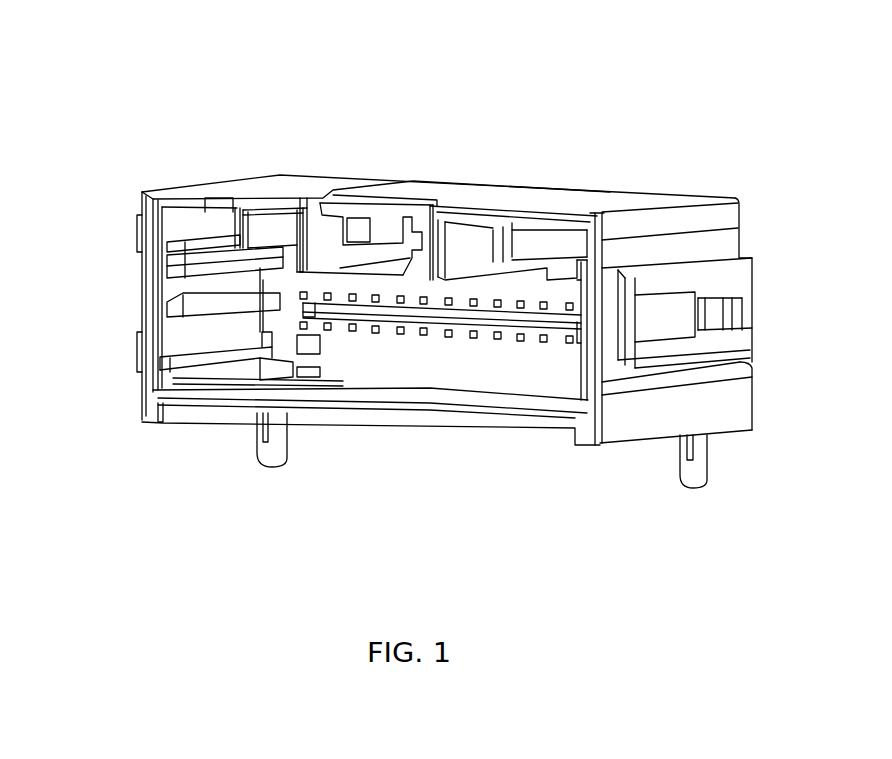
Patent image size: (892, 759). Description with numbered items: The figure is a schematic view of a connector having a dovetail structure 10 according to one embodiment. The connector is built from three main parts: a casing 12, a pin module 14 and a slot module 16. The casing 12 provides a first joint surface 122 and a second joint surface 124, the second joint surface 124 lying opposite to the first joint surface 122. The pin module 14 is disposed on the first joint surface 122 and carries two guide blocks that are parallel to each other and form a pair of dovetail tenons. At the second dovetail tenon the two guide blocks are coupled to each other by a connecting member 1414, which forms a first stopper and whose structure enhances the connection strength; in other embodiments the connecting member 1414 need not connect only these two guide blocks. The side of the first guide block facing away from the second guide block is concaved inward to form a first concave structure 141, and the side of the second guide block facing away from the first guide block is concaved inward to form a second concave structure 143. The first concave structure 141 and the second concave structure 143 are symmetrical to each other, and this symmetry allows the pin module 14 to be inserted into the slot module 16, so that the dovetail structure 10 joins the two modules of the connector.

The dovetail structure 10 is at (178, 36).
The casing 12 is at (569, 198).
The pin module 14 is at (745, 333).
The slot module 16 is at (127, 302).
The first joint surface 122 is at (617, 430).
The second joint surface 124 is at (141, 401).
The first concave structure 141 is at (625, 278).
The second concave structure 143 is at (618, 368).
The connecting member 1414 is at (728, 298).